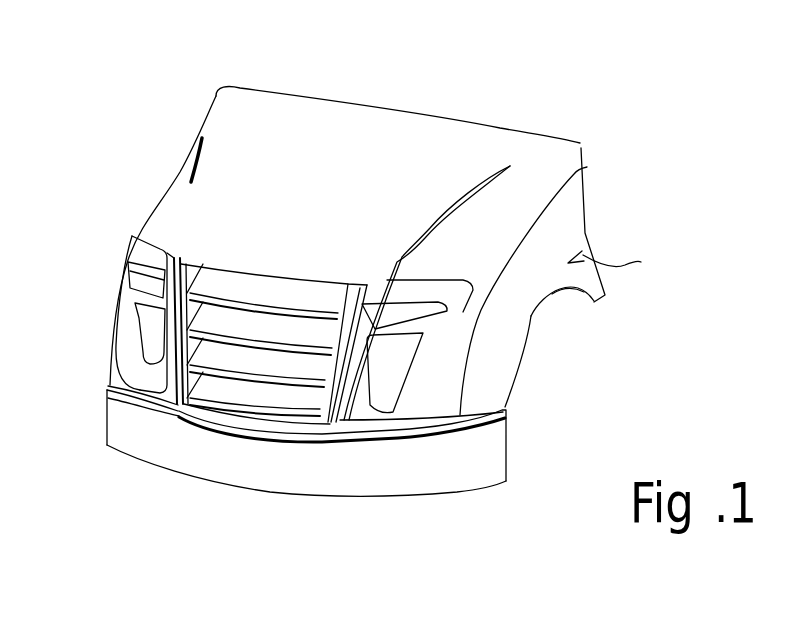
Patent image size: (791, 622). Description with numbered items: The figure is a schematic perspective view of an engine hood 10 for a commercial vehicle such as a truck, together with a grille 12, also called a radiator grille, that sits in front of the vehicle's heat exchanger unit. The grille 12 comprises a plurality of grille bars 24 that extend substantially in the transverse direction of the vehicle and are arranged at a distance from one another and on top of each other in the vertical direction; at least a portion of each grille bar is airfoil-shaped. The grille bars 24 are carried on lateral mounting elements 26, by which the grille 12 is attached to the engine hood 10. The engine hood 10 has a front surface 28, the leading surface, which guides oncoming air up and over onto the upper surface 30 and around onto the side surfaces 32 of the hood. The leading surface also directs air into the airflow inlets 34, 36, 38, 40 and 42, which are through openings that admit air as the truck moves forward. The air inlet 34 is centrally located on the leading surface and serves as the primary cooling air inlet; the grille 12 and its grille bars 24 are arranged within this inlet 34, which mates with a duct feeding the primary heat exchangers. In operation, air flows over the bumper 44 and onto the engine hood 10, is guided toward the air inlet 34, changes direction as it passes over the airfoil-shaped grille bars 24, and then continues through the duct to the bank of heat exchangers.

The engine hood 10 is at (582, 143).
The grille 12 is at (336, 279).
The grille bars 24 is at (225, 278).
The lateral mounting elements 26 is at (177, 258).
The front surface 28 is at (126, 221).
The upper surface 30 is at (302, 123).
The side surfaces 32 is at (625, 262).
The air inlet 34 is at (226, 414).
The airflow inlet 36 is at (136, 343).
The airflow inlet 38 is at (380, 420).
The airflow inlet 40 is at (139, 282).
The airflow inlet 42 is at (424, 319).
The bumper 44 is at (511, 452).